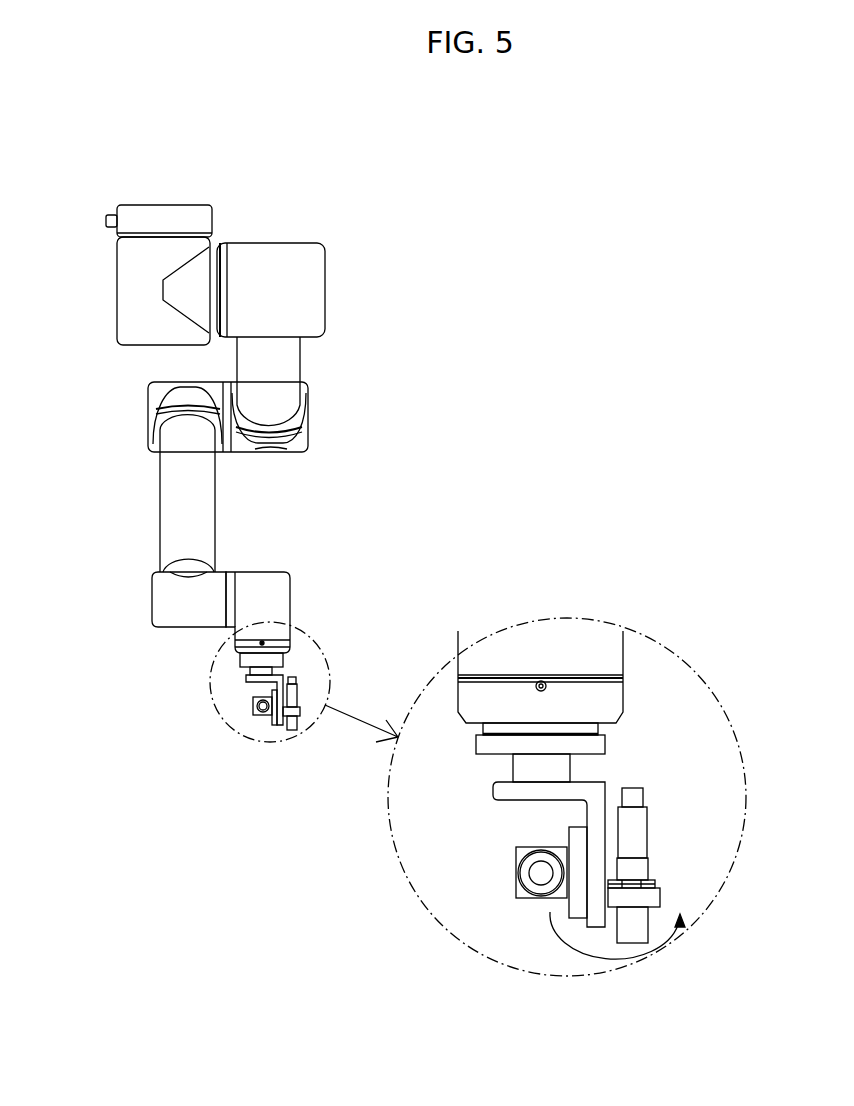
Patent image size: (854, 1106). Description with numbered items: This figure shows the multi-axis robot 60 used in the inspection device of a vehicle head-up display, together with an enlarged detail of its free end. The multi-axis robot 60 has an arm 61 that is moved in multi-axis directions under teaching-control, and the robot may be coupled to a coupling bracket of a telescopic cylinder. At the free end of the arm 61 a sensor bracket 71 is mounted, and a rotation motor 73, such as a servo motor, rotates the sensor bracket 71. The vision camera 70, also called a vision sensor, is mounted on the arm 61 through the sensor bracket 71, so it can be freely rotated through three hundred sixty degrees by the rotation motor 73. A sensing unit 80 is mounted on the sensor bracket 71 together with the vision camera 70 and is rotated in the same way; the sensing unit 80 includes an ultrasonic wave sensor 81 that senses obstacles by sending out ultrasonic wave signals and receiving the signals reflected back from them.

The multi-axis robot 60 is at (446, 204).
The arm 61 is at (285, 597).
The vision camera 70 is at (515, 890).
The sensor bracket 71 is at (608, 790).
The rotation motor 73 is at (528, 764).
The sensing unit 80 is at (657, 862).
The ultrasonic wave sensor 81 is at (642, 823).